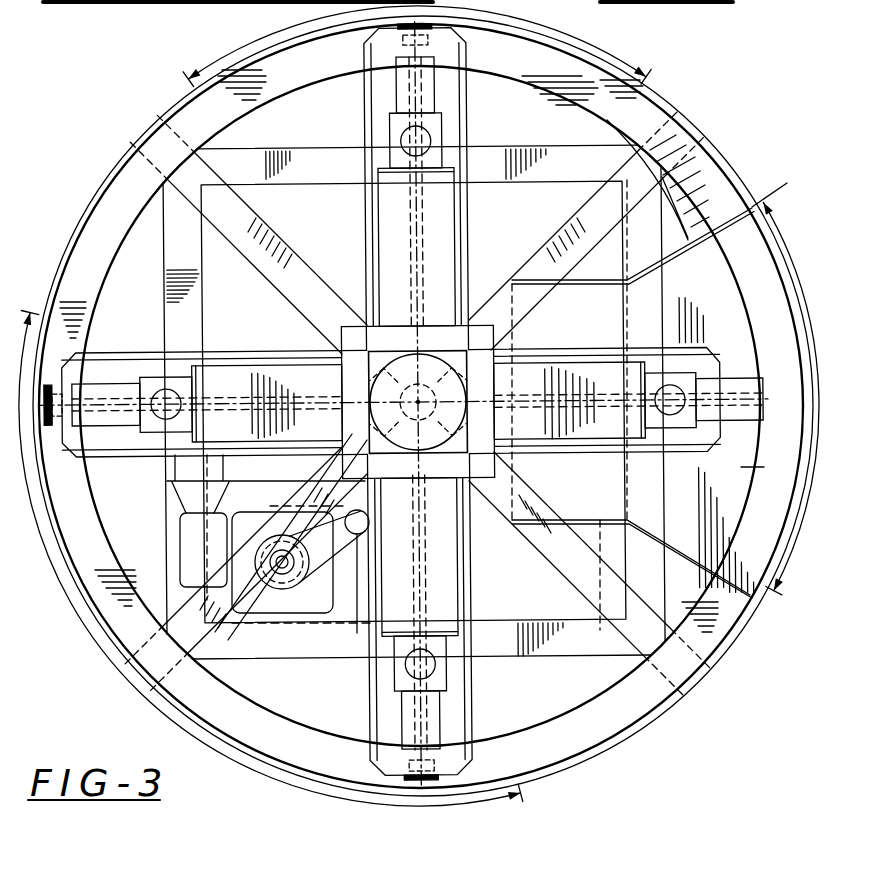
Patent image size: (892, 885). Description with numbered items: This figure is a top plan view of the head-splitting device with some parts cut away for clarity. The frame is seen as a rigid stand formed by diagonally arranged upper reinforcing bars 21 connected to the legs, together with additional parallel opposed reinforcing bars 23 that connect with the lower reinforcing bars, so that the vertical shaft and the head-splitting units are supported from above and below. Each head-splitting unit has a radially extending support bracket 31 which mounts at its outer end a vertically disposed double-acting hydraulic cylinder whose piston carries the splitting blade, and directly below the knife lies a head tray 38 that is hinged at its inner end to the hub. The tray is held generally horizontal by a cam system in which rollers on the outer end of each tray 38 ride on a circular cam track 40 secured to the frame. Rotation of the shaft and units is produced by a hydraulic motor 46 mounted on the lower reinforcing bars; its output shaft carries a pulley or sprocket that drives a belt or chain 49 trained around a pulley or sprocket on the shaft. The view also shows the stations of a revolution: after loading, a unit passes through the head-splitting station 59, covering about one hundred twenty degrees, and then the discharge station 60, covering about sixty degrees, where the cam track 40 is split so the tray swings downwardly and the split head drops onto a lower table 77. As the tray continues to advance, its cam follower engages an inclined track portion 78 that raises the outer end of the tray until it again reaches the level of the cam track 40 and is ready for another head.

The upper reinforcing bars 21 is at (290, 240).
The parallel opposed reinforcing bars 23 is at (323, 147).
The support bracket 31 is at (603, 372).
The head tray 38 is at (118, 366).
The circular cam track 40 is at (87, 230).
The hydraulic motor 46 is at (322, 584).
The belt or chain 49 is at (307, 473).
The head-splitting station 59 is at (143, 688).
The discharge station 60 is at (788, 248).
The lower table 77 is at (638, 405).
The inclined track portion 78 is at (710, 172).